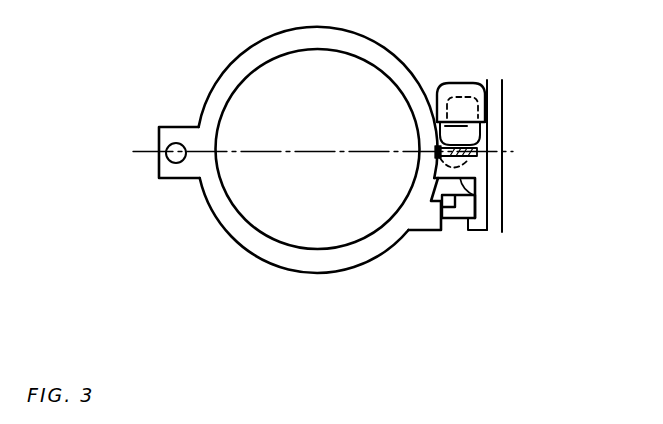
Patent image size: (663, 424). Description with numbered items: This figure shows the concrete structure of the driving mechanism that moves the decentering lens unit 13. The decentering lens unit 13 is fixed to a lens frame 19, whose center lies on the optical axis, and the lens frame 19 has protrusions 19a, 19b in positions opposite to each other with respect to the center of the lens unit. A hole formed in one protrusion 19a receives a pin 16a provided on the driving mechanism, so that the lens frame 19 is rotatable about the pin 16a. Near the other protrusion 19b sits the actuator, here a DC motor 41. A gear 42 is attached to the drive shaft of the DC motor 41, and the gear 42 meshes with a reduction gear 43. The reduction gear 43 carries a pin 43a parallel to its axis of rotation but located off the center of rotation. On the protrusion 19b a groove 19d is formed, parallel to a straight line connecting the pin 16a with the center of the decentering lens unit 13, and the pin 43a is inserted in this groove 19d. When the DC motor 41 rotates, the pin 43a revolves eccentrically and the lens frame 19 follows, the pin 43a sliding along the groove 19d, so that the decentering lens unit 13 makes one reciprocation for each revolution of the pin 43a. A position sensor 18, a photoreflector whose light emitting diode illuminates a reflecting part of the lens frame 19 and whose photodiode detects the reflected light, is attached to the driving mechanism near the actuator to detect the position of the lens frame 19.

The decentering lens unit 13 is at (317, 237).
The pin 16a is at (177, 163).
The position sensor 18 is at (457, 220).
The lens frame 19 is at (242, 237).
The protrusion 19a is at (157, 137).
The protrusion 19b is at (480, 197).
The groove 19d is at (473, 175).
The DC motor 41 is at (446, 84).
The gear 42 is at (467, 94).
The reduction gear 43 is at (478, 131).
The pin 43a is at (468, 151).